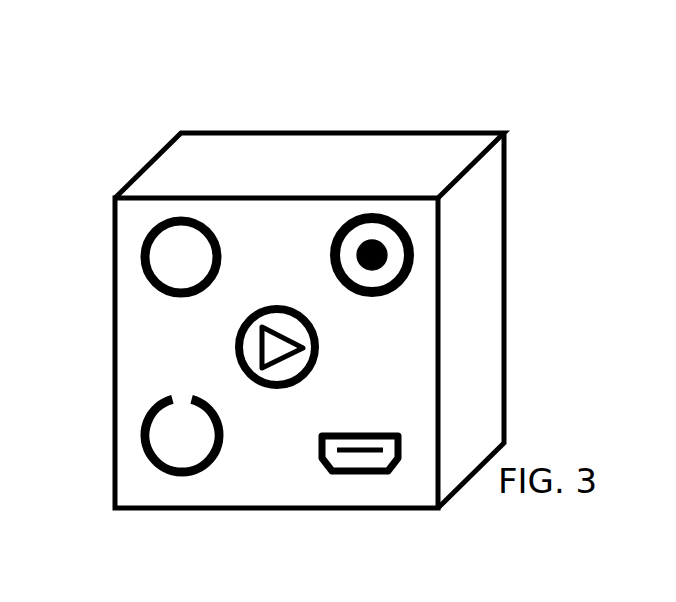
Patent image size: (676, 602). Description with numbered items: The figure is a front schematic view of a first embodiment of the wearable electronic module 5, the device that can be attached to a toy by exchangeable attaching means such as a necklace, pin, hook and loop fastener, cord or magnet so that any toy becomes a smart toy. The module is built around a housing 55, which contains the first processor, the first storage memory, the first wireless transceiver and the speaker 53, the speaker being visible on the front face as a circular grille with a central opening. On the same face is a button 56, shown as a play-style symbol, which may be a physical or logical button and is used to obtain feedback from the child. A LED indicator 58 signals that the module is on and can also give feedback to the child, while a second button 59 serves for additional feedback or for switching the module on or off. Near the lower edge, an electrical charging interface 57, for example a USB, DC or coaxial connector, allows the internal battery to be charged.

The wearable electronic module 5 is at (124, 146).
The speaker 53 is at (372, 258).
The housing 55 is at (502, 237).
The button 56 is at (278, 307).
The electrical charging interface 57 is at (345, 443).
The LED indicator 58 is at (212, 257).
The second button 59 is at (203, 443).